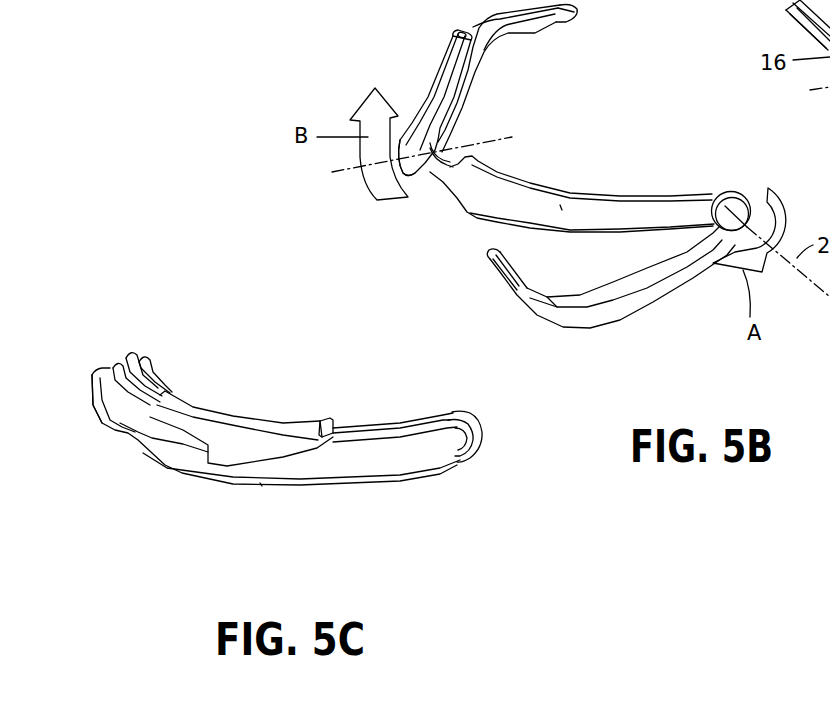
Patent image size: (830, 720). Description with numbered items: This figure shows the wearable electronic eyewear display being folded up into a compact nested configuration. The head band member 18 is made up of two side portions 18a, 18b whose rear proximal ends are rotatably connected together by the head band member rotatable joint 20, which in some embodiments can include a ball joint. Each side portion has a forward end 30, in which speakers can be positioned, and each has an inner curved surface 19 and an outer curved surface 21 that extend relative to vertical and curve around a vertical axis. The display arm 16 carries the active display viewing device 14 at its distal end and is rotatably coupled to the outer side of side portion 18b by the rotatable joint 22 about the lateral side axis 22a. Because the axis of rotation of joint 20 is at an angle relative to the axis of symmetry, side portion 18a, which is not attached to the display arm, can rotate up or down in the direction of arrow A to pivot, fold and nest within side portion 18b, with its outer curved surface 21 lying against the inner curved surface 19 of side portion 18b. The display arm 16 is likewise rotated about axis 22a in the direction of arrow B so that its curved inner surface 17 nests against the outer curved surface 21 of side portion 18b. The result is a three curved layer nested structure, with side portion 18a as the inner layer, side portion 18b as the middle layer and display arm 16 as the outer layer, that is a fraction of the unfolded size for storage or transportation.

In FIG. 5B, the active display viewing device 14 is at (569, 20).
In FIG. 5C, the active display viewing device 14 is at (320, 418).
In FIG. 5B, the display arm 16 is at (424, 98).
In FIG. 5C, the display arm 16 is at (112, 433).
In FIG. 5B, the inner surface of the display arm 17 is at (478, 58).
In FIG. 5B, the head band member 18 is at (582, 265).
In FIG. 5C, the head band member 18 is at (303, 449).
In FIG. 5B, the side portion 18a is at (613, 312).
In FIG. 5C, the side portion 18a is at (208, 410).
In FIG. 5B, the side portion 18b is at (555, 205).
In FIG. 5C, the side portion 18b is at (312, 473).
In FIG. 5B, the inner curved surface 19 is at (630, 193).
In FIG. 5B, the head band member rotatable joint 20 is at (740, 200).
In FIG. 5C, the head band member rotatable joint 20 is at (475, 445).
In FIG. 5B, the outer curved surface 21 is at (578, 230).
In FIG. 5C, the outer curved surface 21 is at (263, 473).
In FIG. 5B, the rotatable joint 22 is at (393, 168).
In FIG. 5C, the rotatable joint 22 is at (93, 407).
In FIG. 5B, the side axis 22a is at (495, 145).
In FIG. 5B, the forward end 30 is at (488, 252).
In FIG. 5C, the forward end 30 is at (135, 350).